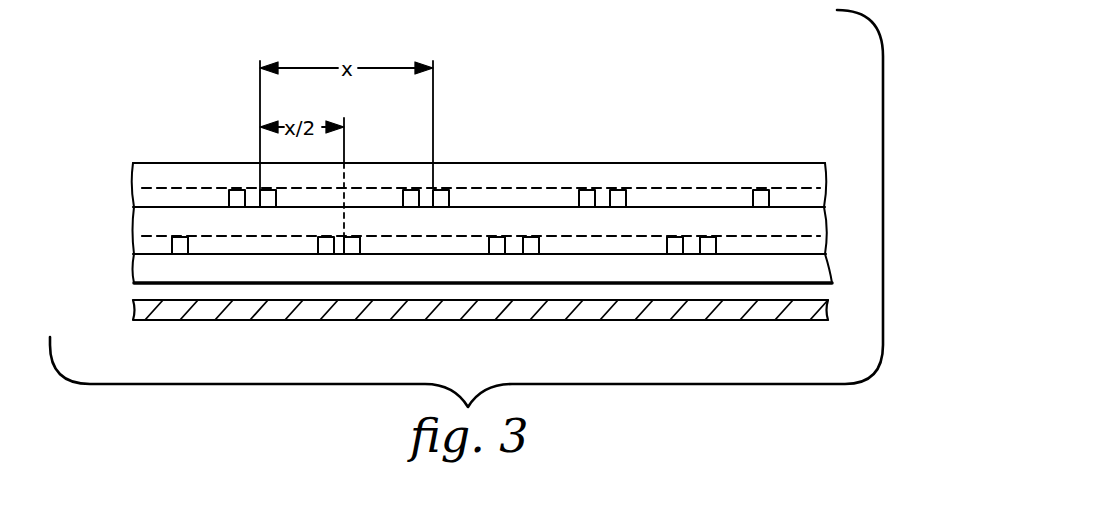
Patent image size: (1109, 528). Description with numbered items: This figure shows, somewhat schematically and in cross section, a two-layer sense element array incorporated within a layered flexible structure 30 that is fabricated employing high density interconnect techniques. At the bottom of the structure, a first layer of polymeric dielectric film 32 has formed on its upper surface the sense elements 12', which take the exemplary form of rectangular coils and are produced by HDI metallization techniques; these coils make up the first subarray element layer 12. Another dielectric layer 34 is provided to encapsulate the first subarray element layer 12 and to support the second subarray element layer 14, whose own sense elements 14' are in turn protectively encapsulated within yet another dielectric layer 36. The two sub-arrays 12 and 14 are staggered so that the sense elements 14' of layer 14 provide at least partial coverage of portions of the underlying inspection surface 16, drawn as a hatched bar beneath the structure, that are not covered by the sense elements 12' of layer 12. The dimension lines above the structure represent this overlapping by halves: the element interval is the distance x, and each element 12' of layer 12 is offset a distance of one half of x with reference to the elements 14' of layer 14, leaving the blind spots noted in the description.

The layered flexible structure 30 is at (743, 146).
The dielectric layer 36 is at (782, 165).
The second subarray element layer 14 is at (444, 139).
The sense elements 14' is at (499, 137).
The dielectric layer 34 is at (823, 221).
The first subarray element layer 12 is at (437, 279).
The sense elements 12' is at (444, 173).
The polymeric dielectric film 32 is at (826, 266).
The inspection surface 16 is at (207, 314).